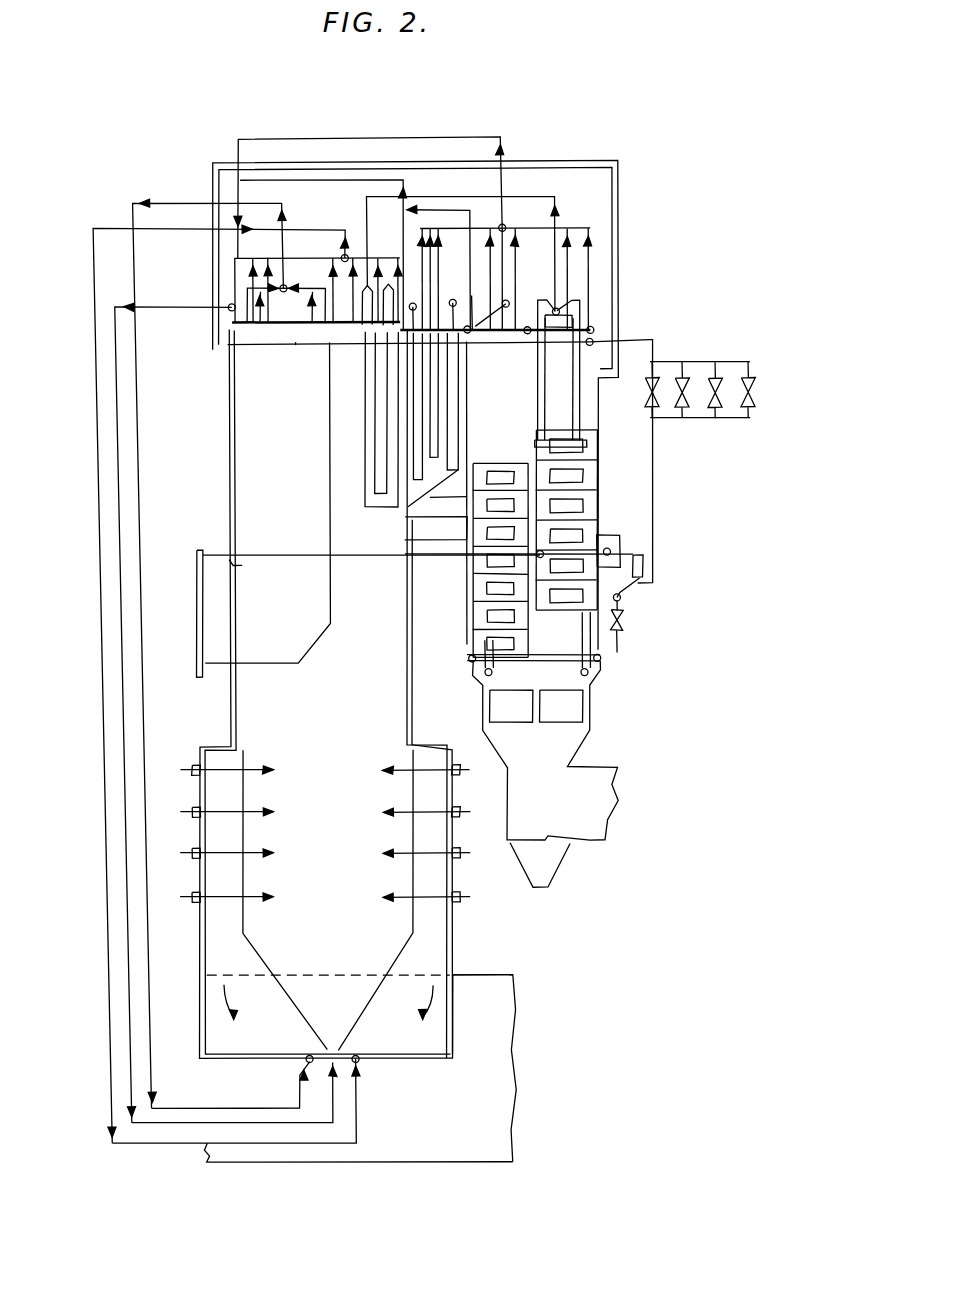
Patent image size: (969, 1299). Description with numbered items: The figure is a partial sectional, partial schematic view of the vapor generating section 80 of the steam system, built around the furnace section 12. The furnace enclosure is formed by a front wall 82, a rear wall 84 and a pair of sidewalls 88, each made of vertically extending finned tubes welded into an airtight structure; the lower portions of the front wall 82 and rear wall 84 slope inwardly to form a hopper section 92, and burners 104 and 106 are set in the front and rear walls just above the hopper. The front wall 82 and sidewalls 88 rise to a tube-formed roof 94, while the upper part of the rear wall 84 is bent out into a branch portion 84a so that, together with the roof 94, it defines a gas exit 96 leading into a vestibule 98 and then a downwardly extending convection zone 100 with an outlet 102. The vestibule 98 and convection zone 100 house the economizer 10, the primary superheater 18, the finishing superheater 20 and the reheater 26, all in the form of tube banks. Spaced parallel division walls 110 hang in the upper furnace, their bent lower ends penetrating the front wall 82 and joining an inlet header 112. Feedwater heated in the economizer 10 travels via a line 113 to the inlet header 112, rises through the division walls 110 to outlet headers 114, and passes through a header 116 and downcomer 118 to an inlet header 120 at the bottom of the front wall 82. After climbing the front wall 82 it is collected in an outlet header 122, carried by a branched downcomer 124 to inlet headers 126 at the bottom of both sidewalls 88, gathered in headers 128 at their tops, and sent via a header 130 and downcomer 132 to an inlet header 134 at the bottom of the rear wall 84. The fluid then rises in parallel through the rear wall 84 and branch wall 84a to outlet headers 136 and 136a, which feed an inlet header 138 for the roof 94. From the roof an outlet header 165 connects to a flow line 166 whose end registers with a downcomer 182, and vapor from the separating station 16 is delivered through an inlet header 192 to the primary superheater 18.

The economizer 10 is at (636, 593).
The furnace section 12 is at (337, 926).
The separating station 16 is at (759, 365).
The primary superheater 18 is at (568, 487).
The finishing superheater 20 is at (436, 379).
The reheater 26 is at (503, 492).
The vapor generating section 80 is at (132, 188).
The front wall 82 is at (203, 764).
The rear wall 84 is at (408, 530).
The branch portion 84a is at (465, 421).
The sidewalls 88 is at (317, 685).
The hopper section 92 is at (309, 1016).
The roof 94 is at (284, 344).
The gas exit 96 is at (400, 418).
The vestibule 98 is at (446, 377).
The convection zone 100 is at (561, 435).
The outlet 102 is at (587, 779).
The burners 104 is at (195, 889).
The burners 106 is at (452, 816).
The division walls 110 is at (268, 494).
The inlet header 112 is at (202, 549).
The line 113 is at (452, 548).
The outlet headers 114 is at (306, 343).
The header 116 is at (291, 286).
The downcomer 118 is at (140, 627).
The inlet header 120 is at (301, 1056).
The outlet header 122 is at (239, 307).
The downcomer 124 is at (123, 509).
The inlet headers 126 is at (362, 1051).
The headers 128 is at (290, 294).
The header 130 is at (353, 249).
The downcomer 132 is at (100, 294).
The inlet header 134 is at (351, 1064).
The outlet header 136 is at (372, 338).
The outlet header 136a is at (475, 302).
The inlet header 138 is at (234, 344).
The outlet header 165 is at (599, 335).
The flow line 166 is at (656, 347).
The downcomer 182 is at (657, 467).
The inlet header 192 is at (610, 547).